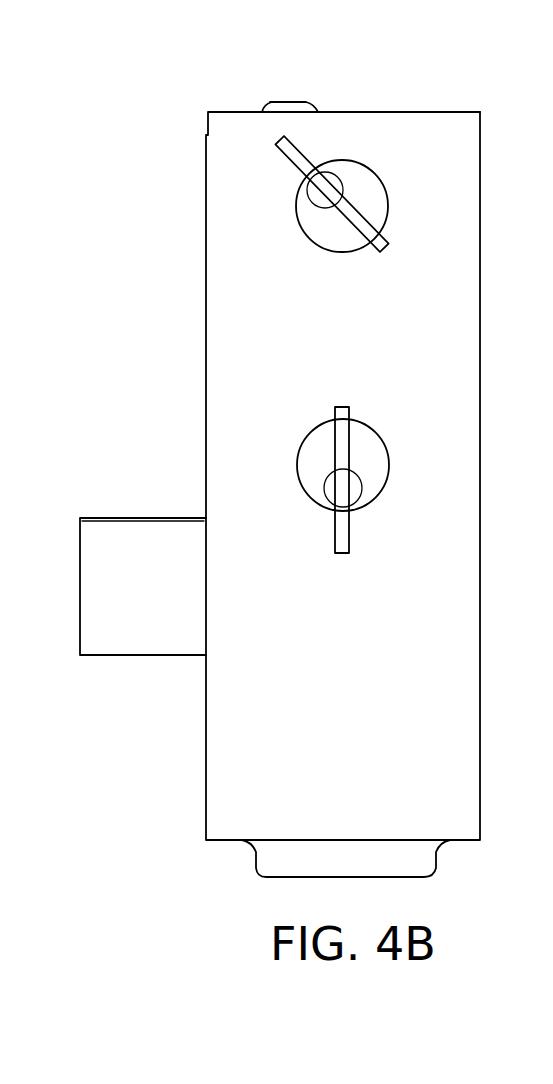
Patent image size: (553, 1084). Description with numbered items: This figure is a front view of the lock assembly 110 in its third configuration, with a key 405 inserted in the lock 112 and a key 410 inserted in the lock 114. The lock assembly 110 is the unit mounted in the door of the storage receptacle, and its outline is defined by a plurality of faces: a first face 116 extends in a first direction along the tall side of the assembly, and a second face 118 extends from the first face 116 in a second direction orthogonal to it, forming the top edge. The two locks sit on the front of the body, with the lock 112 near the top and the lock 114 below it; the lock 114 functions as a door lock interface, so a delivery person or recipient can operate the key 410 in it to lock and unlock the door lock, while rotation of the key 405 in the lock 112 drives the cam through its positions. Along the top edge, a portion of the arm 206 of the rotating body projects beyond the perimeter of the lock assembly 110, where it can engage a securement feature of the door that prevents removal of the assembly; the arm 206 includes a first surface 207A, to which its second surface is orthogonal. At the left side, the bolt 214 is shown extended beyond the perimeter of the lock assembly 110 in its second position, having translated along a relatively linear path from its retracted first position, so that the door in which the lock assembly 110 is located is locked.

The lock assembly 110 is at (146, 126).
The first face 116 is at (480, 310).
The second face 118 is at (432, 112).
The arm 206 is at (302, 103).
The first surface 207A is at (284, 101).
The lock 112 is at (387, 205).
The key 405 is at (295, 158).
The lock 114 is at (370, 432).
The key 410 is at (345, 545).
The bolt 214 is at (109, 645).